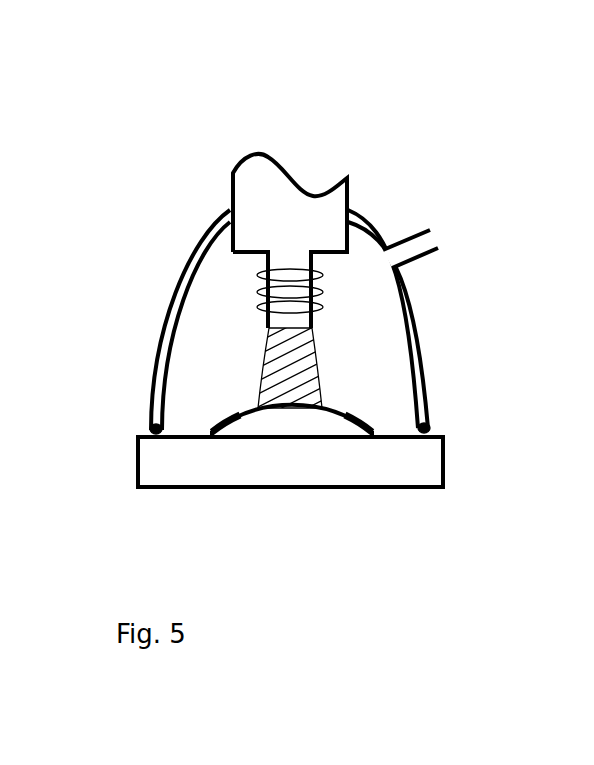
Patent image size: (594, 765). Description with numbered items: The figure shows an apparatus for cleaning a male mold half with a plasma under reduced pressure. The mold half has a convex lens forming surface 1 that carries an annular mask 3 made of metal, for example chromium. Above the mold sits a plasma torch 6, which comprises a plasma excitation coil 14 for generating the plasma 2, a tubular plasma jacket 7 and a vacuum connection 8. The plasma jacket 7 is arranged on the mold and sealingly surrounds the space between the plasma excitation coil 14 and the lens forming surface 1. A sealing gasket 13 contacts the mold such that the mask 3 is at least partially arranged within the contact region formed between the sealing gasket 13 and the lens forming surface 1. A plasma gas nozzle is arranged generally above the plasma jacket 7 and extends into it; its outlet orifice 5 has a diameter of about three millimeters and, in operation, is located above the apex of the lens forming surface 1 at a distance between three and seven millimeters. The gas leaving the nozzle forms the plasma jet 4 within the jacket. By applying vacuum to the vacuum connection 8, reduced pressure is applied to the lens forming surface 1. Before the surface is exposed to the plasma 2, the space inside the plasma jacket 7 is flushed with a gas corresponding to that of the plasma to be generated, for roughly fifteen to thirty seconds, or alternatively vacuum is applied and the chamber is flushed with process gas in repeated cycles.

The lens forming surface 1 is at (295, 412).
The plasma 2 is at (310, 386).
The annular mask 3 is at (222, 421).
The plasma jet 4 is at (288, 257).
The outlet orifice 5 is at (302, 322).
The plasma torch 6 is at (400, 176).
The plasma jacket 7 is at (423, 408).
The vacuum connection 8 is at (430, 240).
The sealing gasket 13 is at (147, 430).
The plasma excitation coil 14 is at (258, 272).